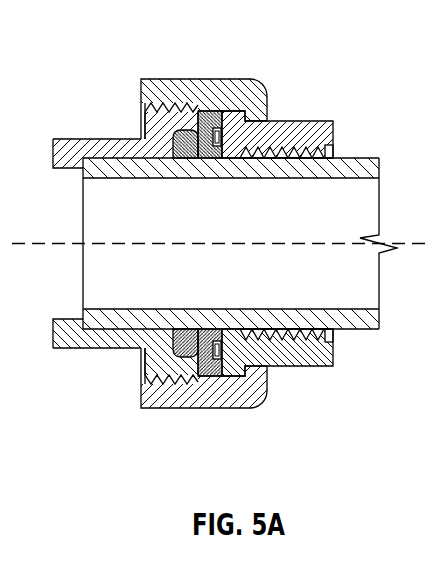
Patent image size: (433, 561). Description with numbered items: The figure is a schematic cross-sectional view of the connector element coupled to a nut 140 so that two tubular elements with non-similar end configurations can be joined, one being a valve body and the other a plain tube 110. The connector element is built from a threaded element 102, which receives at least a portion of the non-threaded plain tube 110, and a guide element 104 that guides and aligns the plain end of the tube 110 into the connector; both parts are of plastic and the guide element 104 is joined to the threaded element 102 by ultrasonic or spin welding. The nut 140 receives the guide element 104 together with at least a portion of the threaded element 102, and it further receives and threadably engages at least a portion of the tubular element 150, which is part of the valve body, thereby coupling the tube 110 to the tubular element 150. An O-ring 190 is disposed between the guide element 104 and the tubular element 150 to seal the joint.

The threaded element 102 is at (306, 135).
The guide element 104 is at (214, 113).
The plain tube 110 is at (358, 167).
The nut 140 is at (203, 97).
The tubular element 150 is at (120, 340).
The O-ring 190 is at (185, 355).